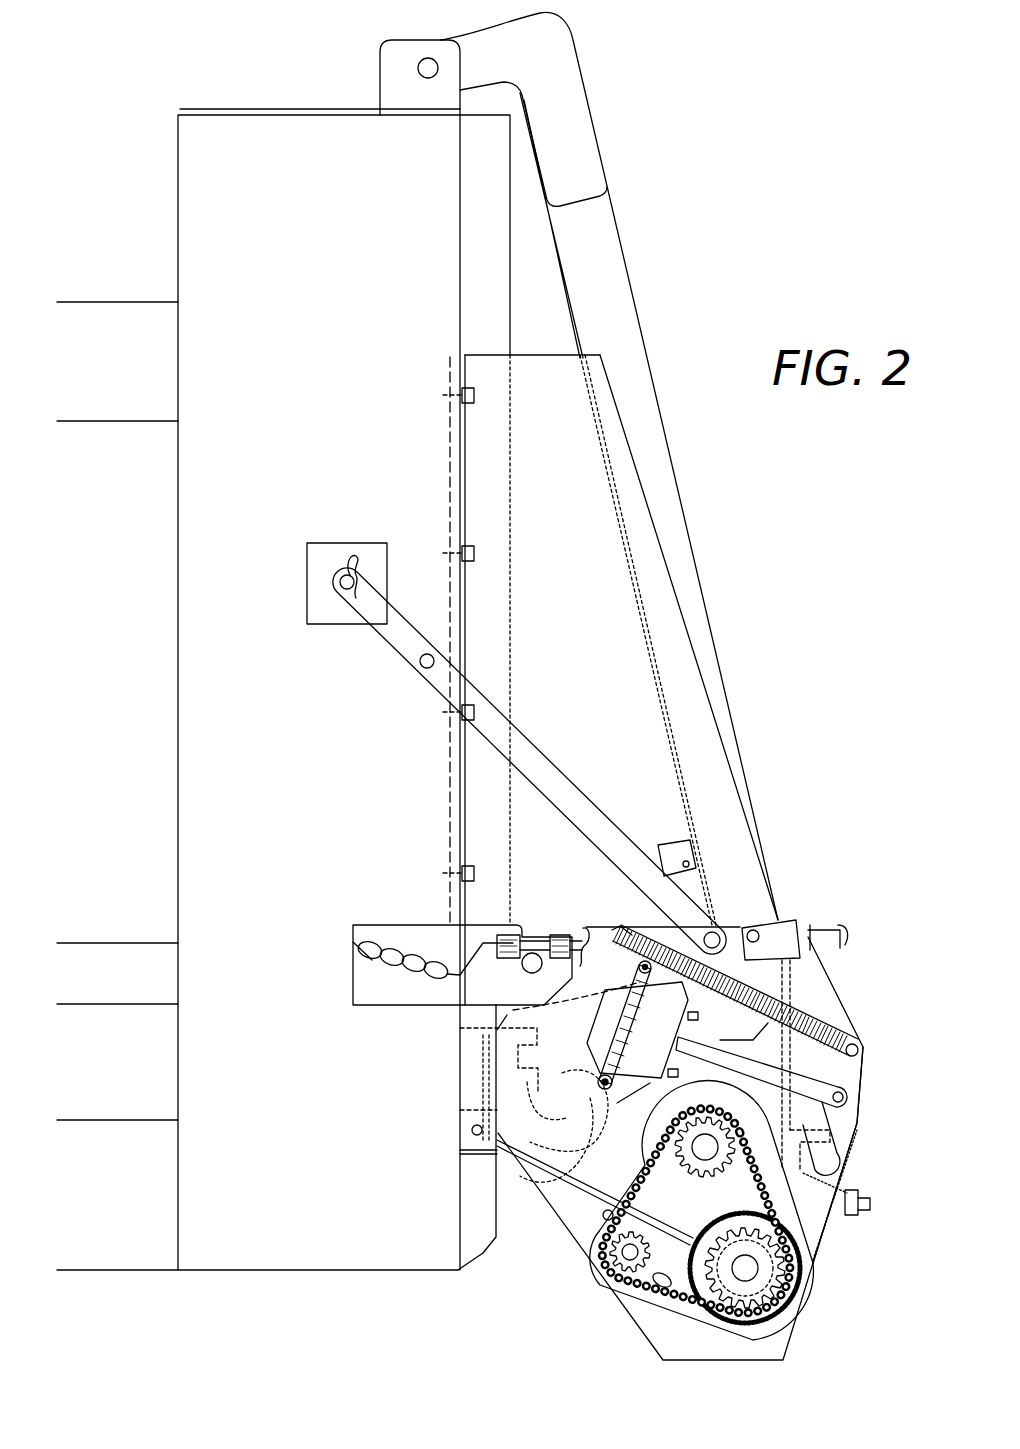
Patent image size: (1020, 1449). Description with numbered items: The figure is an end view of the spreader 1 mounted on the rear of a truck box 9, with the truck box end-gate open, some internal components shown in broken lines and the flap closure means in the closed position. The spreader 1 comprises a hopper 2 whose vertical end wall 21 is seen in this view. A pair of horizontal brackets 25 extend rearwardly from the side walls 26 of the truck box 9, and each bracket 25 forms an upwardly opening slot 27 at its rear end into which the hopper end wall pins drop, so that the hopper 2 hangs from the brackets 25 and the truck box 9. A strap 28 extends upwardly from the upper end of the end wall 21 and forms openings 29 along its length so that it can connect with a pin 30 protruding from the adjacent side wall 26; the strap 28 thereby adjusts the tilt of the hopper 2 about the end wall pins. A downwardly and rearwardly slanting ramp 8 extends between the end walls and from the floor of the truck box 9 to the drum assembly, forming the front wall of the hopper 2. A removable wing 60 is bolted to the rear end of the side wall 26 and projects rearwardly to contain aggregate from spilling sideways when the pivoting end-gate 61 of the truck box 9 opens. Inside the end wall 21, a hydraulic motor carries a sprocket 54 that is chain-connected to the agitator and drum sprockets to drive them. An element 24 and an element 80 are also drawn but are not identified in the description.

The spreader 1 is at (793, 771).
The hopper 2 is at (822, 1285).
The ramp 8 is at (563, 1163).
The truck box 9 is at (262, 130).
The end wall 21 is at (561, 1247).
The lever 24 is at (563, 1074).
The horizontal bracket 25 is at (391, 925).
The side wall 26 is at (217, 267).
The upwardly opening slot 27 is at (527, 927).
The strap 28 is at (563, 773).
The openings 29 is at (422, 667).
The pin 30 is at (340, 582).
The motor sprocket 54 is at (640, 1265).
The removable wing 60 is at (677, 595).
The end-gate 61 is at (638, 303).
The spring 80 is at (793, 918).